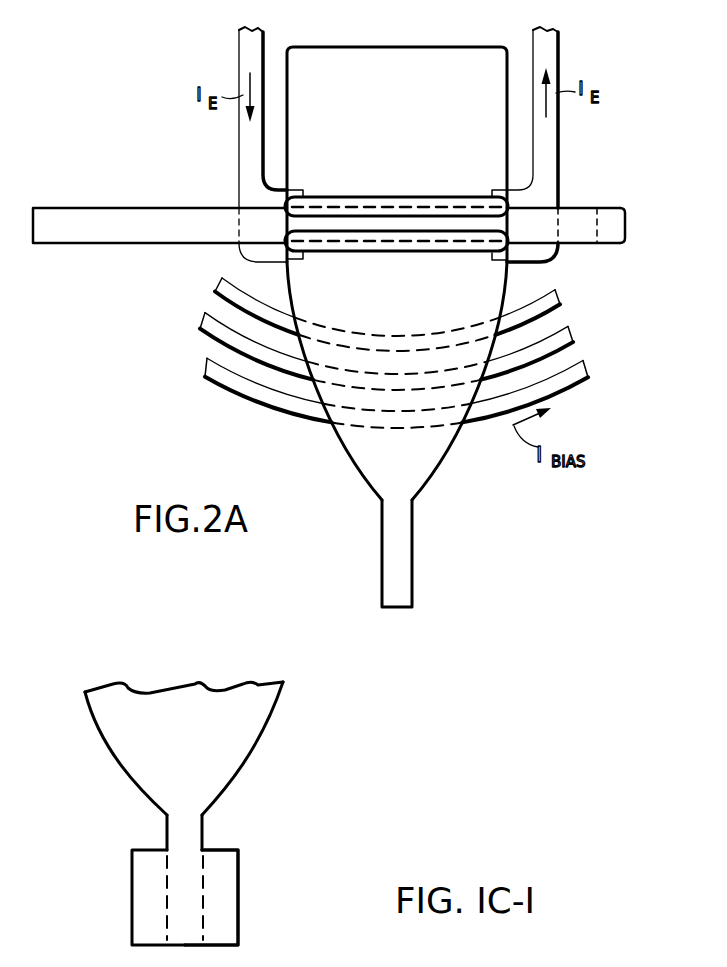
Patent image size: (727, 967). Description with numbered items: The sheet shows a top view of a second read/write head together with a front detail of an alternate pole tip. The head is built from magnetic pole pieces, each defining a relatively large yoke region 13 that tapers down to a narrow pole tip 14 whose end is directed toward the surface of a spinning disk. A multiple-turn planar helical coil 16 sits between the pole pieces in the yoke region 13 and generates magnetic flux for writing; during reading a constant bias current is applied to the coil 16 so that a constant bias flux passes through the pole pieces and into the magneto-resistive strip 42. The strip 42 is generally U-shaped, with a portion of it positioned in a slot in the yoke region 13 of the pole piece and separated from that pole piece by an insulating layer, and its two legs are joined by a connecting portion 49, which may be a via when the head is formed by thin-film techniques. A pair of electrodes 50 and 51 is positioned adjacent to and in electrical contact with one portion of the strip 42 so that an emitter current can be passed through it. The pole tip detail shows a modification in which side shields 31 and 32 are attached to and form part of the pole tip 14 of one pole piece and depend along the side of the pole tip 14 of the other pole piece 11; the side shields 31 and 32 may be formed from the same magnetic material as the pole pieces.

In FIG. 2A, the yoke region 13 is at (427, 58).
In FIG. 1C-1, the yoke region 13 is at (296, 657).
In FIG. 2A, the pole tip 14 is at (425, 500).
In FIG. 1C-1, the pole tip 14 is at (262, 813).
In FIG. 2A, the electrode 50 is at (248, 55).
In FIG. 2A, the electrode 51 is at (553, 50).
In FIG. 2A, the magneto-resistive strip 42 is at (157, 198).
In FIG. 2A, the connecting portion 49 is at (625, 230).
In FIG. 2A, the multiple-turn planar helical coil 16 is at (556, 276).
In FIG. 1C-1, the side shield 31 is at (132, 900).
In FIG. 1C-1, the side shield 32 is at (238, 908).
In FIG. 1C-1, the pole piece 11 is at (167, 925).